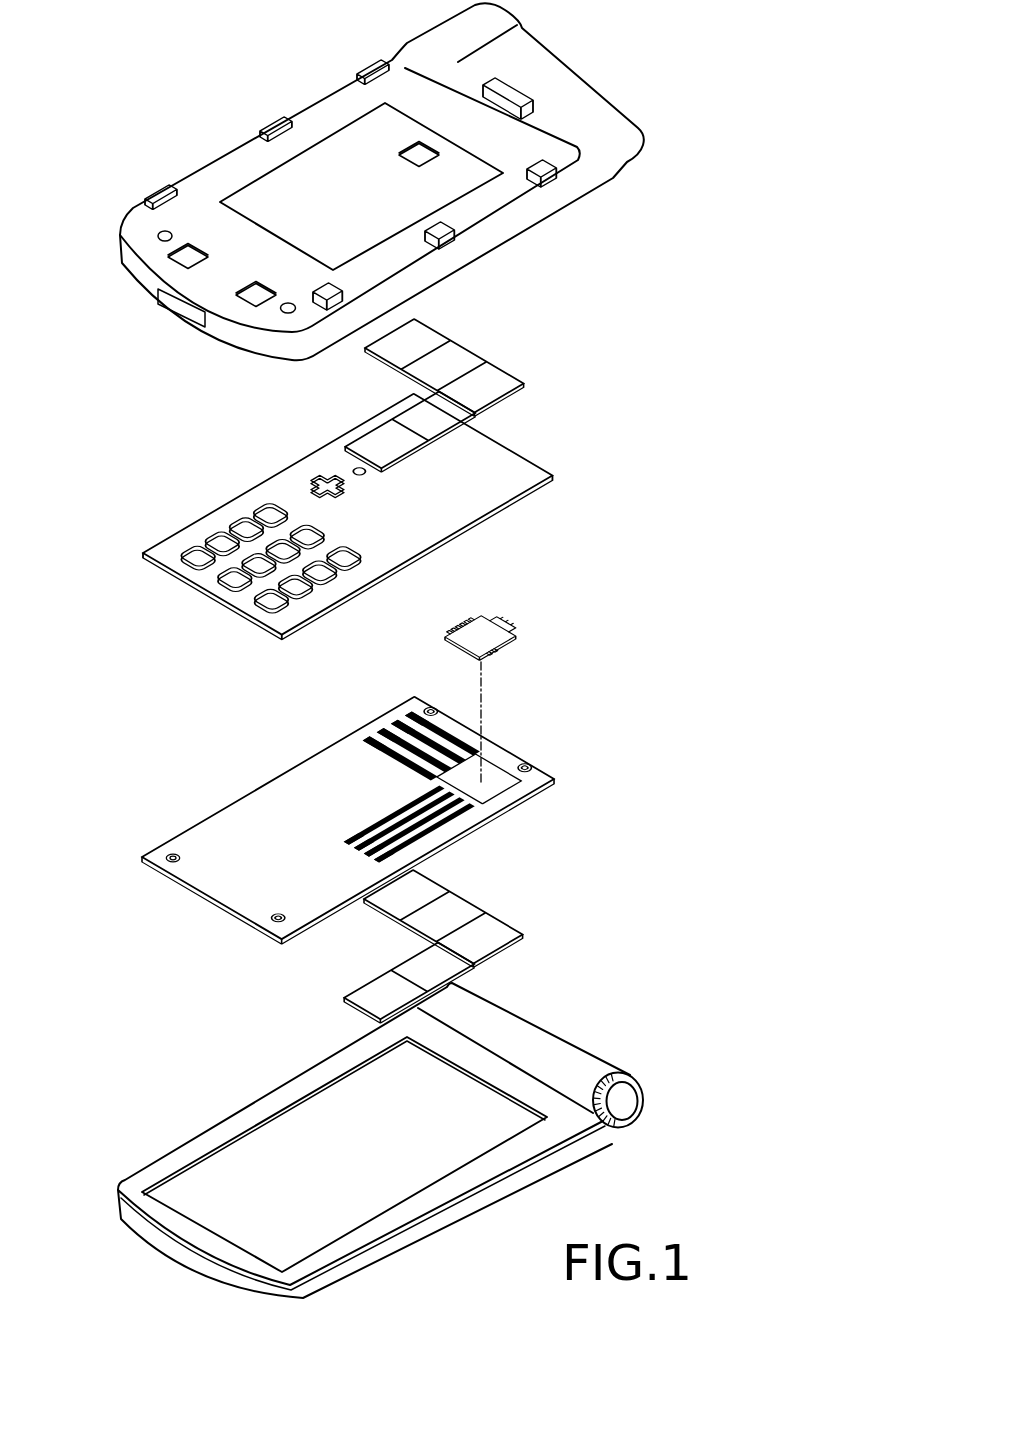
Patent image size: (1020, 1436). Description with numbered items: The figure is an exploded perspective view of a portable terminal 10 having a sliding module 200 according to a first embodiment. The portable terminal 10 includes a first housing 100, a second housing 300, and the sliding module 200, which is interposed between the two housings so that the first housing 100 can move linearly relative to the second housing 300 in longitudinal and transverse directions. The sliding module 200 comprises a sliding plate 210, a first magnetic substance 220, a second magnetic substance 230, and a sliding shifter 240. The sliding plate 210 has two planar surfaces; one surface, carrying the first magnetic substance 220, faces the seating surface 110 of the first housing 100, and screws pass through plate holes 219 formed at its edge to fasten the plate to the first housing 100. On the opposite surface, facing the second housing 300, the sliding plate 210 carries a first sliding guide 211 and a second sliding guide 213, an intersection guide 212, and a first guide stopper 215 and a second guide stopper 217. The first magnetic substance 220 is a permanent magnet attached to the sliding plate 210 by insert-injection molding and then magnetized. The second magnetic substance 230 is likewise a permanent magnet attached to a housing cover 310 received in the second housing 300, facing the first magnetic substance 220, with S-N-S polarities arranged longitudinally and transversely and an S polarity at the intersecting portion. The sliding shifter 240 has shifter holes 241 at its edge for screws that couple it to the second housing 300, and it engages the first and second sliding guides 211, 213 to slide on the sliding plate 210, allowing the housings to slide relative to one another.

The portable terminal 10 is at (112, 59).
The first housing 100 is at (579, 1017).
The seating surface 110 is at (222, 1222).
The sliding module 200 is at (578, 763).
The sliding plate 210 is at (242, 792).
The first sliding guide 211 is at (422, 826).
The intersection guide 212 is at (488, 768).
The second sliding guide 213 is at (393, 730).
The first guide stopper 215 is at (362, 848).
The second guide stopper 217 is at (383, 740).
The plate hole 219 is at (167, 862).
The first magnetic substance 220 is at (521, 922).
The second magnetic substance 230 is at (482, 349).
The sliding shifter 240 is at (502, 611).
The shifter hole 241 is at (515, 637).
The second housing 300 is at (285, 93).
The housing cover 310 is at (498, 468).